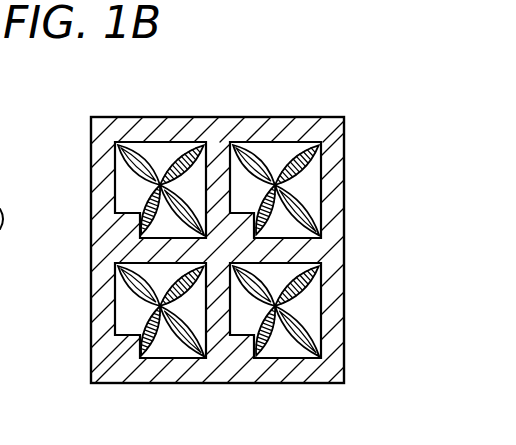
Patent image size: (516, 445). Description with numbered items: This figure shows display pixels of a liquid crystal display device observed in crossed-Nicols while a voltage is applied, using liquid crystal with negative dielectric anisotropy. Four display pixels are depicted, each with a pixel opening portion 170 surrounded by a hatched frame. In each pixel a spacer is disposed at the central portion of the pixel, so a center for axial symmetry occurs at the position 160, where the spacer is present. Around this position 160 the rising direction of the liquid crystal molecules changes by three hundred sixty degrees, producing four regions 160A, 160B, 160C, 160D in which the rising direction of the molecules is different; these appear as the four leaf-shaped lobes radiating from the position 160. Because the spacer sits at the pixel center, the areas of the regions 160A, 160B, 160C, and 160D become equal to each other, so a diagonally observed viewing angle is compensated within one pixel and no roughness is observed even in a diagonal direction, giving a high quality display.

The center for axial symmetry position 160 is at (238, 198).
The region of differing rising direction 160A is at (259, 158).
The region of differing rising direction 160B is at (318, 150).
The region of differing rising direction 160C is at (287, 195).
The region of differing rising direction 160D is at (262, 238).
The pixel opening portion 170 is at (171, 348).